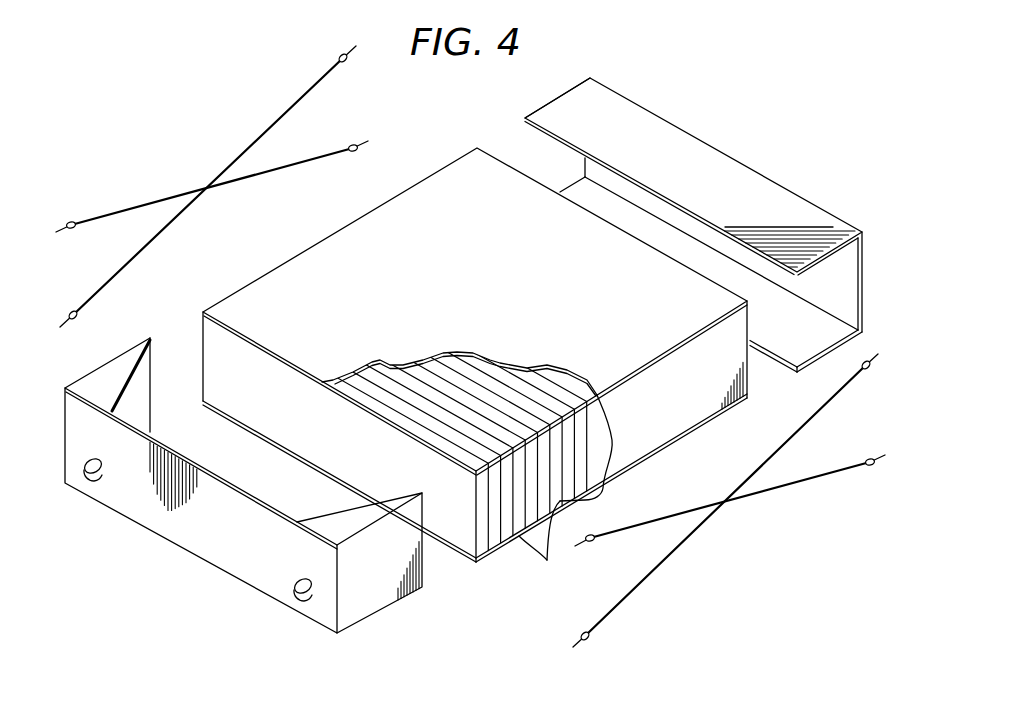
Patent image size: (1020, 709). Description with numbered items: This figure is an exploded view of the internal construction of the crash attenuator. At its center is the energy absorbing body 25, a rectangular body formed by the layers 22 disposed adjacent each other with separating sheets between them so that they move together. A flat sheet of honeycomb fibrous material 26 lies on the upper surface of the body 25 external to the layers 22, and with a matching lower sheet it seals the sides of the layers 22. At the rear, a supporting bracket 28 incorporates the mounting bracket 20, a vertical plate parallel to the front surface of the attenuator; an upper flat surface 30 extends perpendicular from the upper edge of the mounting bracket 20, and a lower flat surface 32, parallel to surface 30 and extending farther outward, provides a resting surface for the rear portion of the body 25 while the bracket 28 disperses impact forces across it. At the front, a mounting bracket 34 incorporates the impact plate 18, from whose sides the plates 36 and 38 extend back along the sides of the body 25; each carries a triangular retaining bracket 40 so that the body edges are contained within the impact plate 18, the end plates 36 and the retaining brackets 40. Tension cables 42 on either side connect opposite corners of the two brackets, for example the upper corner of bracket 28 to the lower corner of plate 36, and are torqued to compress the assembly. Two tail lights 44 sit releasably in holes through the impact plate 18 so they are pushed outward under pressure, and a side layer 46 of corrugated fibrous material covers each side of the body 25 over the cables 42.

The impact plate 18 is at (164, 530).
The mounting bracket 20 is at (845, 297).
The layers 22 is at (400, 410).
The energy absorbing body 25 is at (475, 355).
The honeycomb fibrous material sheet 26 is at (492, 249).
The supporting bracket 28 is at (688, 123).
The upper flat surface 30 is at (734, 197).
The lower flat surface 32 is at (802, 346).
The mounting bracket 34 is at (240, 482).
The end plate 36 is at (357, 612).
The plate 38 is at (142, 377).
The retaining bracket 40 is at (133, 346).
The tension cables 42 is at (278, 122).
The tail lights 44 is at (86, 484).
The side layer 46 is at (647, 433).